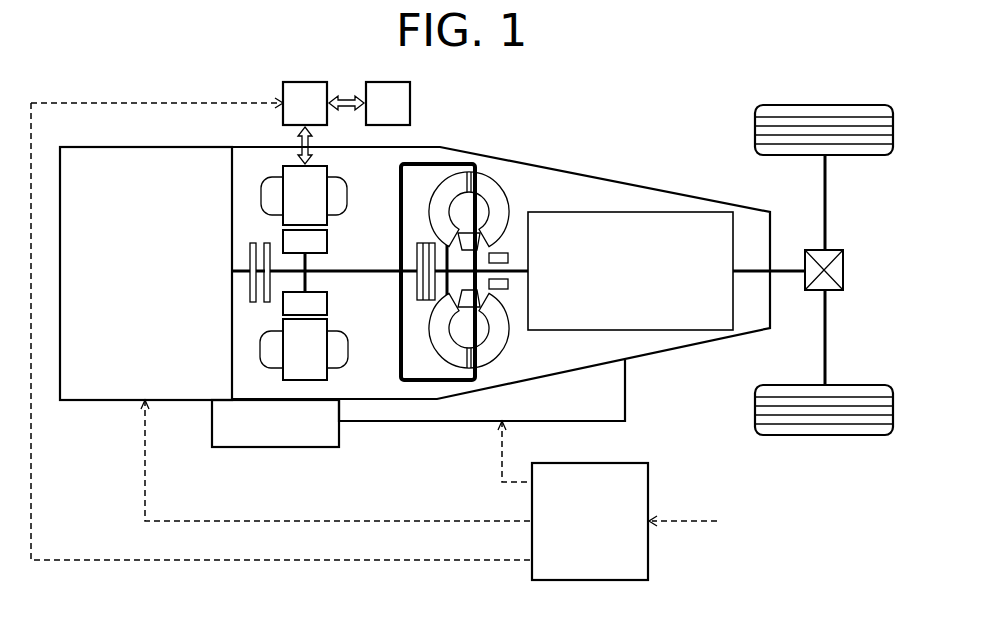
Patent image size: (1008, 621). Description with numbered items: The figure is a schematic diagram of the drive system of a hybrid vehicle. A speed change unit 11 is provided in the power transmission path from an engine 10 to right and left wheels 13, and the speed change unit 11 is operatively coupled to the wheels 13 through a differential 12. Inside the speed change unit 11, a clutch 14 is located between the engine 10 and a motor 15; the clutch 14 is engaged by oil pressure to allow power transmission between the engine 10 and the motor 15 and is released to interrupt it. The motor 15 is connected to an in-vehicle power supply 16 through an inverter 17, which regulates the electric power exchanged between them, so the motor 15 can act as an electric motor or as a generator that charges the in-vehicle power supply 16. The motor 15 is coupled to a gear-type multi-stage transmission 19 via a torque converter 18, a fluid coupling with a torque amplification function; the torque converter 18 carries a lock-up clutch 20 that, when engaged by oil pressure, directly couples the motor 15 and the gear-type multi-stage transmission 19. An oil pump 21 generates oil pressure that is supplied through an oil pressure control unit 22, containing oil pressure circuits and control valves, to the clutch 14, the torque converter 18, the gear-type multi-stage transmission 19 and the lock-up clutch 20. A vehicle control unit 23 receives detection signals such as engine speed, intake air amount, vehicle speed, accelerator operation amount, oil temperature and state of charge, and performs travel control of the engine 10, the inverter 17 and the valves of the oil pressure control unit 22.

The engine 10 is at (97, 400).
The speed change unit 11 is at (675, 352).
The differential 12 is at (838, 250).
The wheels 13 is at (862, 156).
The clutch 14 is at (250, 289).
The motor 15 is at (347, 195).
The in-vehicle power supply 16 is at (410, 104).
The inverter 17 is at (282, 115).
The torque converter 18 is at (505, 188).
The gear-type multi-stage transmission 19 is at (553, 331).
The lock-up clutch 20 is at (417, 254).
The oil pump 21 is at (275, 447).
The oil pressure control unit 22 is at (443, 422).
The vehicle control unit 23 is at (648, 478).